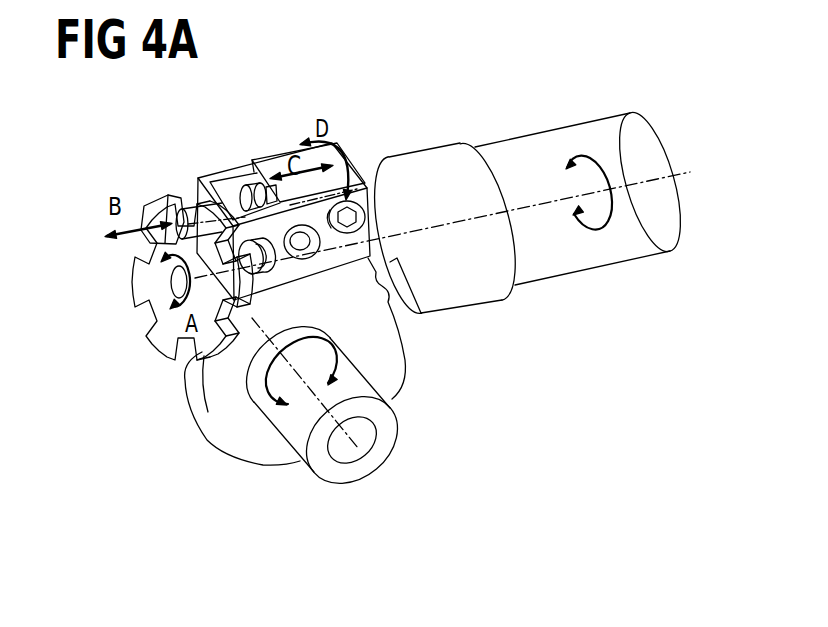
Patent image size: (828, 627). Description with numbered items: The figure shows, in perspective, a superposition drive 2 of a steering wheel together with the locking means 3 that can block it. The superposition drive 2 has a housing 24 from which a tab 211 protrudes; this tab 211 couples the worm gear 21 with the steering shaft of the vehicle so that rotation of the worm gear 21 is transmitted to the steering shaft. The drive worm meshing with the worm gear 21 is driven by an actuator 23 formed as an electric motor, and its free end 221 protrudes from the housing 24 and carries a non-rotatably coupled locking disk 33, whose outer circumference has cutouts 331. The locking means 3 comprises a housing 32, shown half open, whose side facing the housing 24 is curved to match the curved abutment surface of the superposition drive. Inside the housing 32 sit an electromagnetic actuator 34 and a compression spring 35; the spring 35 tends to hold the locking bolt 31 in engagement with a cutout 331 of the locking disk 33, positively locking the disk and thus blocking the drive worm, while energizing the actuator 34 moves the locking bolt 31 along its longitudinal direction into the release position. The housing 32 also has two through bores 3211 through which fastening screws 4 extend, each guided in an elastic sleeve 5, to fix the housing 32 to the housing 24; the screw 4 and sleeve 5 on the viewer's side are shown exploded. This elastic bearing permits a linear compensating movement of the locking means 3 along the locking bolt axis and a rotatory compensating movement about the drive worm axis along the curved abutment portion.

The superposition drive 2 is at (444, 333).
The worm gear 21 is at (225, 435).
The tab 211 is at (392, 427).
The free end of the drive worm 221 is at (170, 281).
The actuator 23 is at (608, 248).
The housing of the superposition drive 24 is at (390, 262).
The locking means 3 is at (252, 120).
The locking bolt 31 is at (192, 210).
The housing of the locking means 32 is at (338, 252).
The through bores 3211 is at (263, 265).
The locking disk 33 is at (155, 322).
The cutouts 331 is at (155, 210).
The actuator 34 is at (347, 172).
The compression spring 35 is at (247, 188).
The fastening screws 4 is at (355, 216).
The elastic sleeve 5 is at (303, 250).